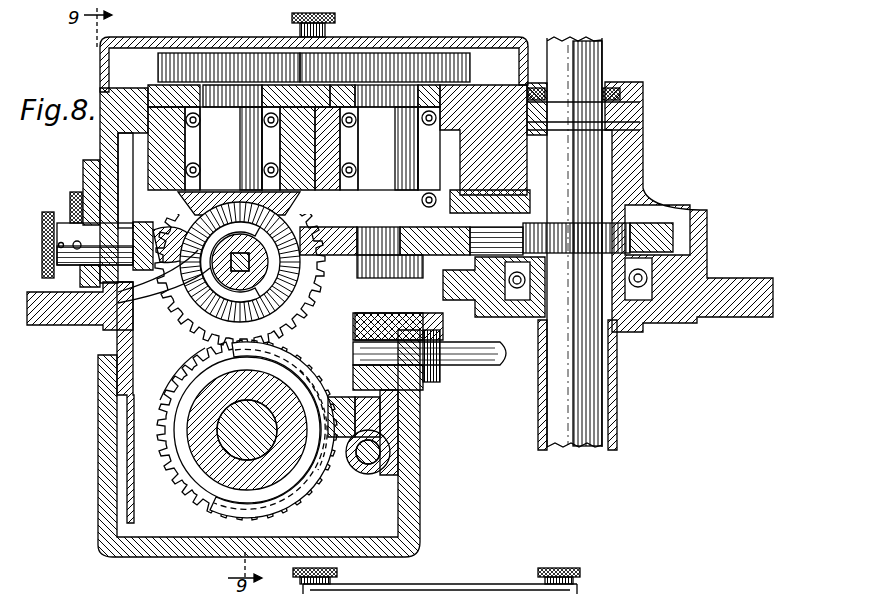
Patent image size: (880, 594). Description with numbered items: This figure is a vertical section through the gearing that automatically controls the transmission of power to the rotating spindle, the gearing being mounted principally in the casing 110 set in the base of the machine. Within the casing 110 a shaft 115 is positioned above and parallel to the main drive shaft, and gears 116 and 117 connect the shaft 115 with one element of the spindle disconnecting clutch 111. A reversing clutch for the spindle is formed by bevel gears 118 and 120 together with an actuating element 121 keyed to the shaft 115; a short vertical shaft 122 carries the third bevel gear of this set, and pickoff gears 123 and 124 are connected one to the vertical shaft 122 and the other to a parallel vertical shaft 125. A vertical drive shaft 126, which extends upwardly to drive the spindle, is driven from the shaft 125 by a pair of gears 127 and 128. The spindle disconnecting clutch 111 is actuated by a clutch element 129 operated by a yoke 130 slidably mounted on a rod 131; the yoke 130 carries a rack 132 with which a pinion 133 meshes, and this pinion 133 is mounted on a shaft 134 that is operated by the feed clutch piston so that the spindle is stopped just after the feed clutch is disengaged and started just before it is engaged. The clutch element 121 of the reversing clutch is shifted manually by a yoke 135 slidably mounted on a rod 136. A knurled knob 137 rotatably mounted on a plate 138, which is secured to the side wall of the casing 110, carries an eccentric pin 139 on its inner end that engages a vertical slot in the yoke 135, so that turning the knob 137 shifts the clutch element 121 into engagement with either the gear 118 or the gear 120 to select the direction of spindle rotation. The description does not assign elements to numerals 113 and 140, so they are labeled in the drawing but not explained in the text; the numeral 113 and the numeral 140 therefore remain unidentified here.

The casing 110 is at (125, 558).
The spindle disconnecting clutch 111 is at (180, 463).
The spur gear 113 is at (205, 300).
The shaft 115 is at (300, 302).
The gear 116 is at (158, 422).
The gear 117 is at (130, 318).
The bevel gear 118 is at (185, 350).
The bevel gear 120 is at (320, 275).
The actuating element 121 is at (292, 326).
The short vertical shaft 122 is at (222, 105).
The pickoff gear 123 is at (268, 80).
The pickoff gear 124 is at (388, 58).
The parallel vertical shaft 125 is at (445, 88).
The vertical drive shaft 126 is at (598, 50).
The gear 127 is at (370, 273).
The gear 128 is at (665, 240).
The clutch element 129 is at (215, 480).
The yoke 130 is at (322, 470).
The rod 131 is at (374, 476).
The rack 132 is at (382, 412).
The pinion 133 is at (355, 368).
The shaft 134 is at (475, 365).
The yoke 135 is at (190, 285).
The rod 136 is at (160, 235).
The knurled knob 137 is at (47, 210).
The plate 138 is at (84, 170).
The eccentric pin 139 is at (78, 313).
The pocket 140 is at (133, 222).